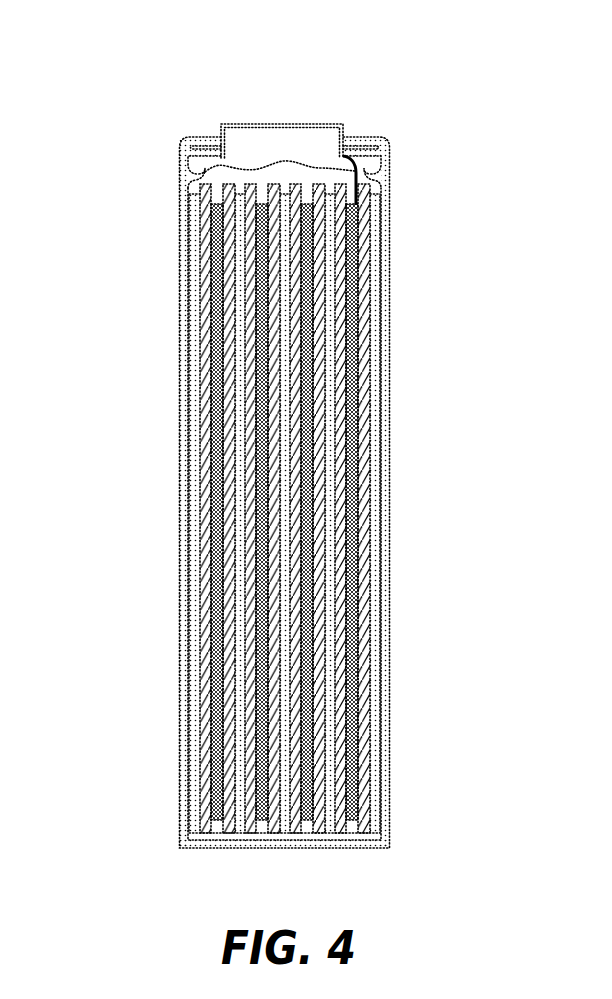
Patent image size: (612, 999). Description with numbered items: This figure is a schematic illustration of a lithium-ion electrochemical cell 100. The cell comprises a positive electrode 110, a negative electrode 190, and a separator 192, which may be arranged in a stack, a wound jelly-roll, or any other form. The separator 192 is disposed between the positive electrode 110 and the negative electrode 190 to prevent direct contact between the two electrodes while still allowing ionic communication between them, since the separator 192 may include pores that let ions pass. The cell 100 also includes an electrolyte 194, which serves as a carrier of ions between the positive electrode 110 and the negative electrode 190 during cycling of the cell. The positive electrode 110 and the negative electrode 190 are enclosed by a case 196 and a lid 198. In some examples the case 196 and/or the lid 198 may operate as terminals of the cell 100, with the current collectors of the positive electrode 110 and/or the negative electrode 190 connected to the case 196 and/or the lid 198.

The lithium-ion electrochemical cell 100 is at (148, 105).
The case 196 is at (175, 223).
The lid 198 is at (307, 113).
The electrolyte 194 is at (340, 170).
The positive electrode 110 is at (188, 308).
The negative electrode 190 is at (188, 382).
The separator 192 is at (187, 485).